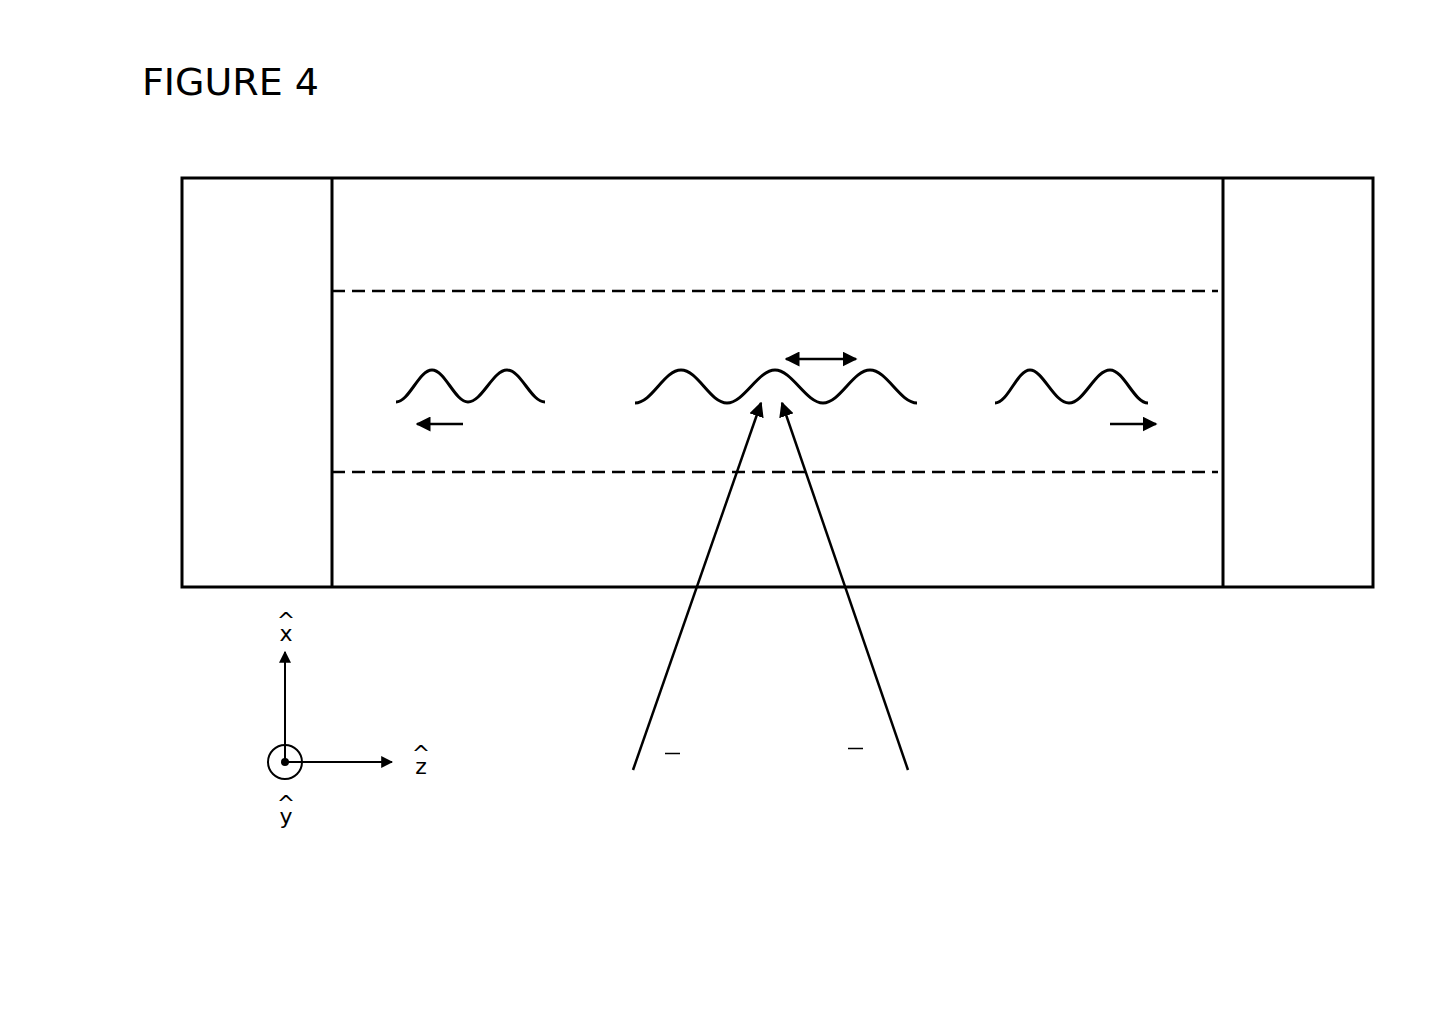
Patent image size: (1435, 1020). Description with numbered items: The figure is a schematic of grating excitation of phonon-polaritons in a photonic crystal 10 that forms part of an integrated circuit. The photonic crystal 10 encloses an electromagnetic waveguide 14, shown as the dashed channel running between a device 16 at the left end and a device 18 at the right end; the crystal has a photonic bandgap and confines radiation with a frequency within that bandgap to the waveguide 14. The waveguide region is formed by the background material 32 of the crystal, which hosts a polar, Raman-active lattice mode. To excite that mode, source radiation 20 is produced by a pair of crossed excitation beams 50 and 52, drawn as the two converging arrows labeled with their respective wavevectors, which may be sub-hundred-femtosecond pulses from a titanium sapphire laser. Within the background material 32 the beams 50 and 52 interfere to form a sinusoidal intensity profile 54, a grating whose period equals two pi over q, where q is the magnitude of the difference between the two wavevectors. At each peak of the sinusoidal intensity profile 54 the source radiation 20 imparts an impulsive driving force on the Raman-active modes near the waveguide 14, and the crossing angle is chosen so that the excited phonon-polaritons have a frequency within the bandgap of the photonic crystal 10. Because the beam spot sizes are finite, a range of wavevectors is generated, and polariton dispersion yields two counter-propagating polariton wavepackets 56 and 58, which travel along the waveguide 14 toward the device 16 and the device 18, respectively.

The photonic crystal 10 is at (931, 230).
The electromagnetic waveguide 14 is at (1150, 328).
The device 16 is at (212, 360).
The device 18 is at (1330, 284).
The EM source radiation 20 is at (963, 677).
The background material 32 is at (401, 352).
The excitation beam 50 is at (670, 677).
The excitation beam 52 is at (868, 648).
The sinusoidal intensity profile 54 is at (897, 384).
The polariton wavepacket 56 is at (452, 378).
The polariton wavepacket 58 is at (1040, 372).